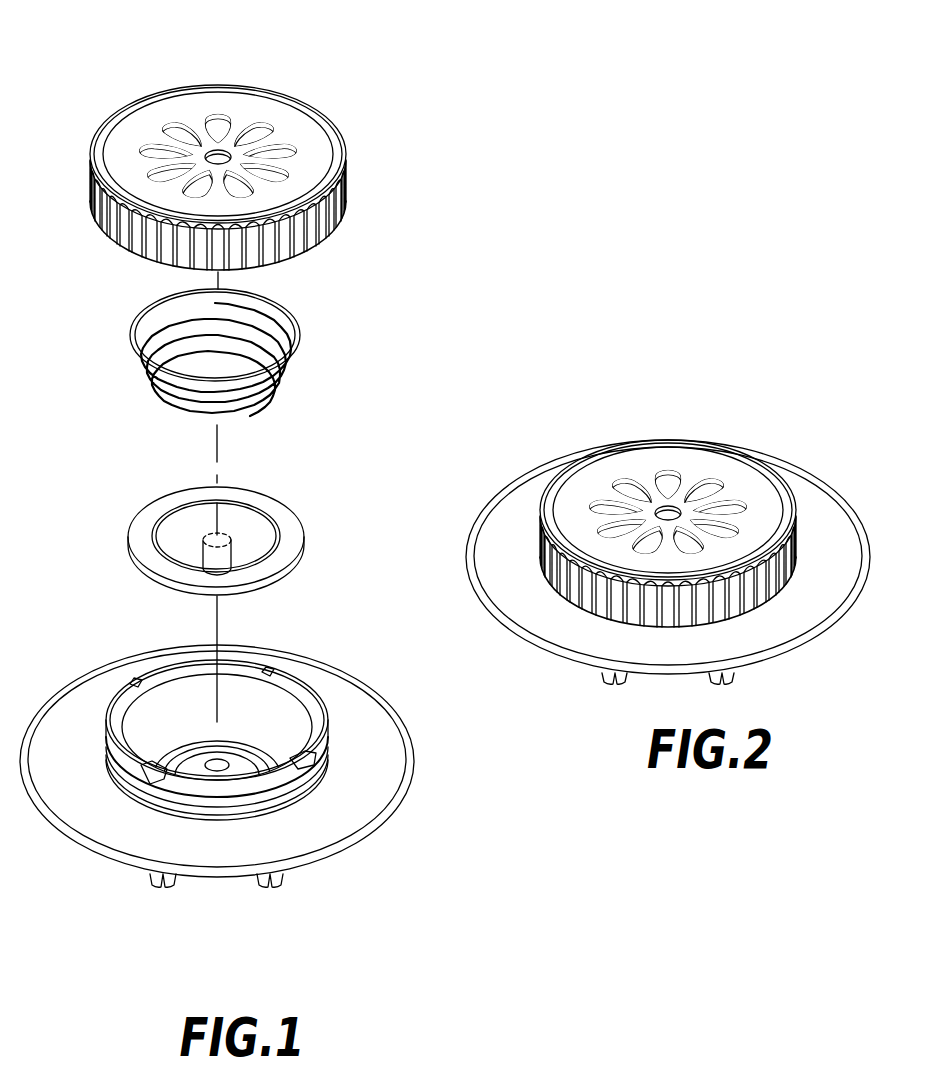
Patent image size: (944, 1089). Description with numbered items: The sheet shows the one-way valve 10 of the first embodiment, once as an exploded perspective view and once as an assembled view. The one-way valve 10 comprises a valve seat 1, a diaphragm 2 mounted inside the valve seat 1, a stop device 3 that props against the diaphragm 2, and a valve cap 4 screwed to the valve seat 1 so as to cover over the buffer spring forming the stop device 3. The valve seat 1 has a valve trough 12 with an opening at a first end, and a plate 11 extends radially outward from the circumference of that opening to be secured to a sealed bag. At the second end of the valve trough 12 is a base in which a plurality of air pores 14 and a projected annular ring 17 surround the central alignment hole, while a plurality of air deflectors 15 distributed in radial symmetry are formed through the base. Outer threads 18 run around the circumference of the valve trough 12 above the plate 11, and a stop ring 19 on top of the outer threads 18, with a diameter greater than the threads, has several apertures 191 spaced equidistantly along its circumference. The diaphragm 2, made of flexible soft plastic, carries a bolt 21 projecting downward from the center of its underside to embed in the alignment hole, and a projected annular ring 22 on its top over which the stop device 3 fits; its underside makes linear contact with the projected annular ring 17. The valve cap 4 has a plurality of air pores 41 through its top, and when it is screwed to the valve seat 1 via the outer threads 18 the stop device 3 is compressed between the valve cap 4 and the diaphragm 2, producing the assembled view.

In FIG. 1, the valve seat 1 is at (415, 810).
In FIG. 2, the valve seat 1 is at (835, 477).
In FIG. 1, the diaphragm 2 is at (290, 527).
In FIG. 1, the stop device 3 is at (290, 328).
In FIG. 1, the valve cap 4 is at (315, 132).
In FIG. 2, the valve cap 4 is at (732, 465).
In FIG. 1, the one-way valve 10 is at (316, 74).
In FIG. 2, the one-way valve 10 is at (777, 407).
In FIG. 1, the plate 11 is at (363, 708).
In FIG. 2, the plate 11 is at (502, 528).
In FIG. 1, the valve trough 12 is at (163, 697).
In FIG. 1, the air pores 14 is at (218, 757).
In FIG. 2, the air pores 14 is at (675, 472).
In FIG. 1, the air deflectors 15 is at (280, 883).
In FIG. 2, the air deflectors 15 is at (607, 683).
In FIG. 1, the projected annular ring 17 is at (167, 747).
In FIG. 1, the outer threads 18 is at (307, 792).
In FIG. 1, the stop ring 19 is at (322, 703).
In FIG. 1, the bolt 21 is at (200, 557).
In FIG. 1, the projected annular ring 22 is at (163, 518).
In FIG. 1, the air pores 41 is at (222, 117).
In FIG. 1, the apertures 191 is at (282, 682).